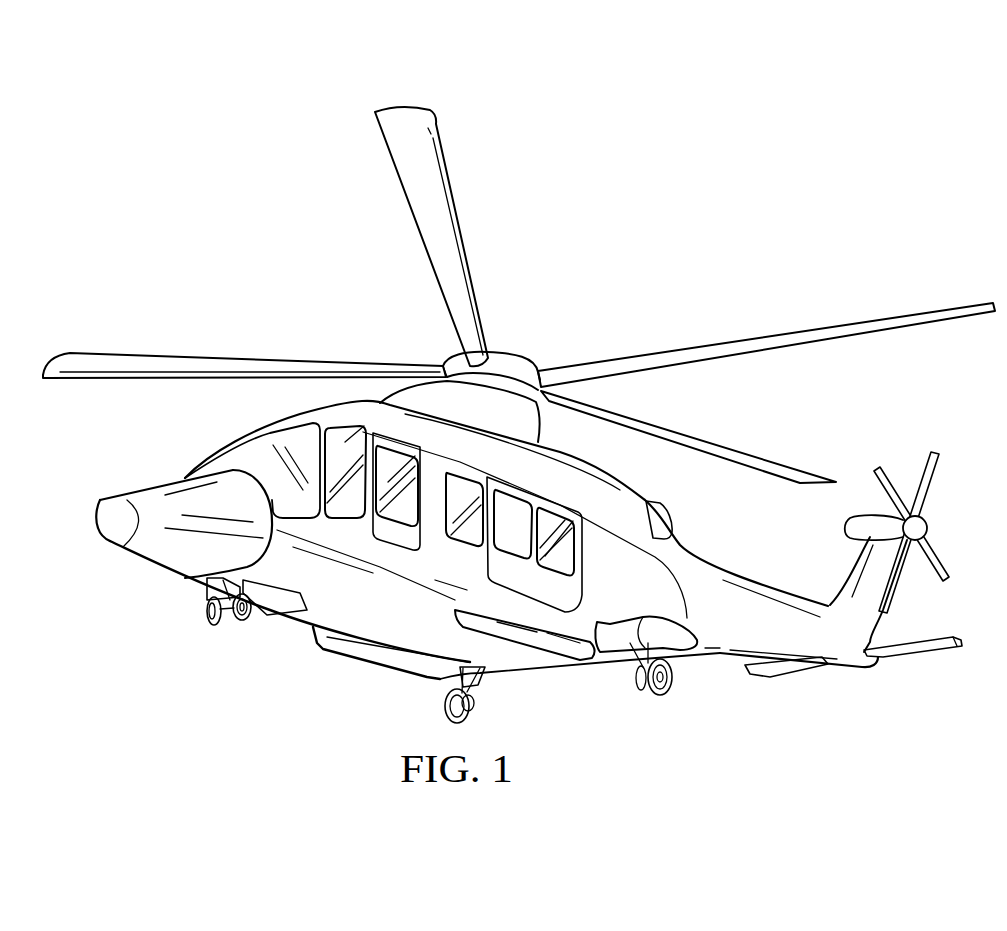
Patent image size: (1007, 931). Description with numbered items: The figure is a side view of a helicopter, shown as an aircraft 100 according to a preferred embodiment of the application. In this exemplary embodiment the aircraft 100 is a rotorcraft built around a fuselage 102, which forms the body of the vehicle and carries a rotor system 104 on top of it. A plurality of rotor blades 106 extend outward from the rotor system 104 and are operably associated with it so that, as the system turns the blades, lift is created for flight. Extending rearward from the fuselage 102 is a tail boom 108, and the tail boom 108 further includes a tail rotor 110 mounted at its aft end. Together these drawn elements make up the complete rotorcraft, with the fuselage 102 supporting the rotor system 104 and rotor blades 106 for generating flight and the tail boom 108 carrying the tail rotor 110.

The aircraft 100 is at (190, 100).
The fuselage 102 is at (314, 620).
The rotor system 104 is at (527, 330).
The rotor blades 106 is at (751, 350).
The tail boom 108 is at (720, 652).
The tail rotor 110 is at (928, 500).